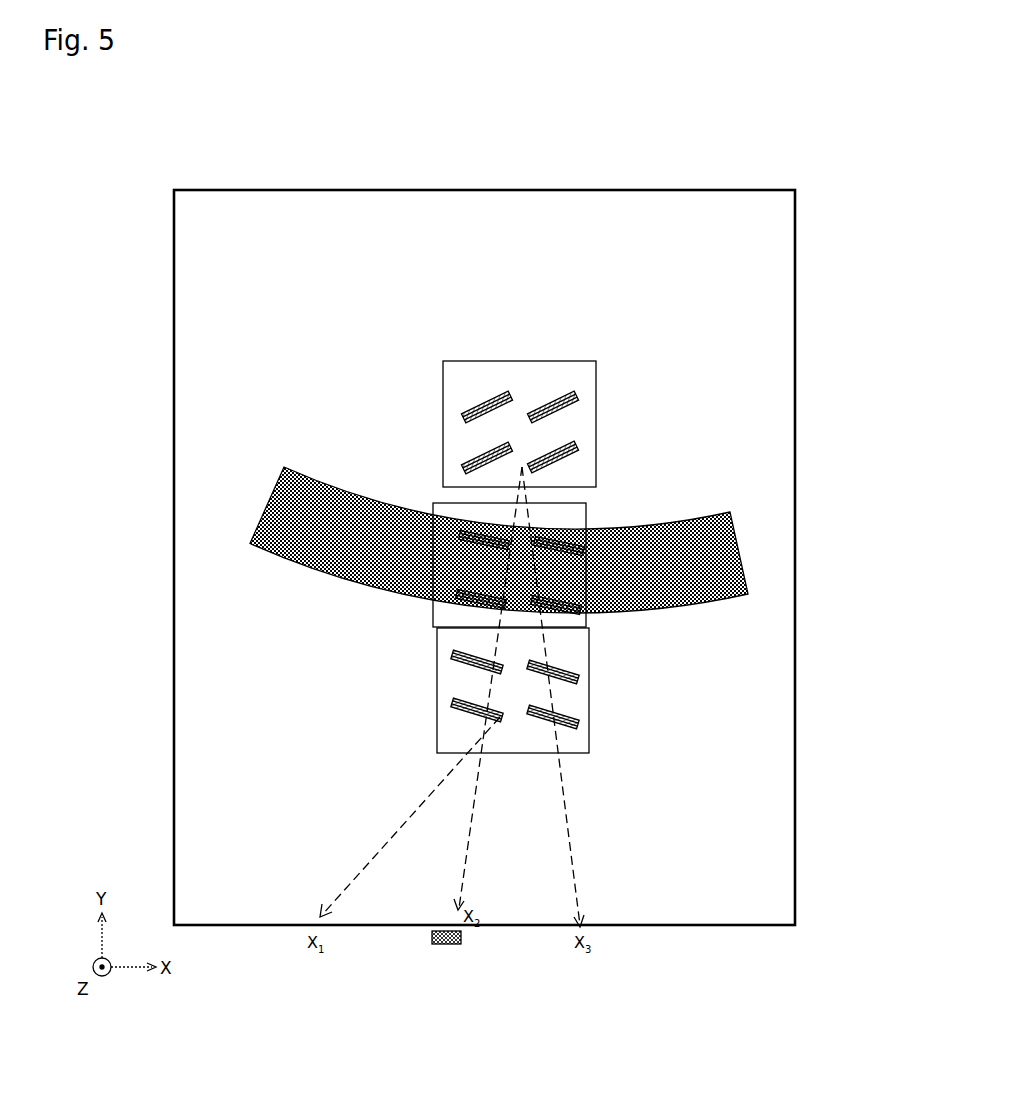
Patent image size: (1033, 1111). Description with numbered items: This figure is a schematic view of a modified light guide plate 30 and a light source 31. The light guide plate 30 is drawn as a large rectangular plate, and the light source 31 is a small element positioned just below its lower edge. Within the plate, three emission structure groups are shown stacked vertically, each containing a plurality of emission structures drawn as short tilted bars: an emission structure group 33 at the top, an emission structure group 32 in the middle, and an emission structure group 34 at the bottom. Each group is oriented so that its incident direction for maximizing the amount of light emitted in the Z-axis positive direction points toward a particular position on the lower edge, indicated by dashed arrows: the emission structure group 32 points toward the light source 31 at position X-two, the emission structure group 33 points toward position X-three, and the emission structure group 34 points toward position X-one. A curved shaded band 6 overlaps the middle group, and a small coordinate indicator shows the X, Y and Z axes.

The light guide plate 30 is at (688, 190).
The curved substrate / workpiece 6 is at (746, 550).
The emission structure group 33 is at (596, 383).
The emission structure group 32 is at (586, 515).
The emission structure group 34 is at (589, 662).
The light source 31 is at (447, 944).